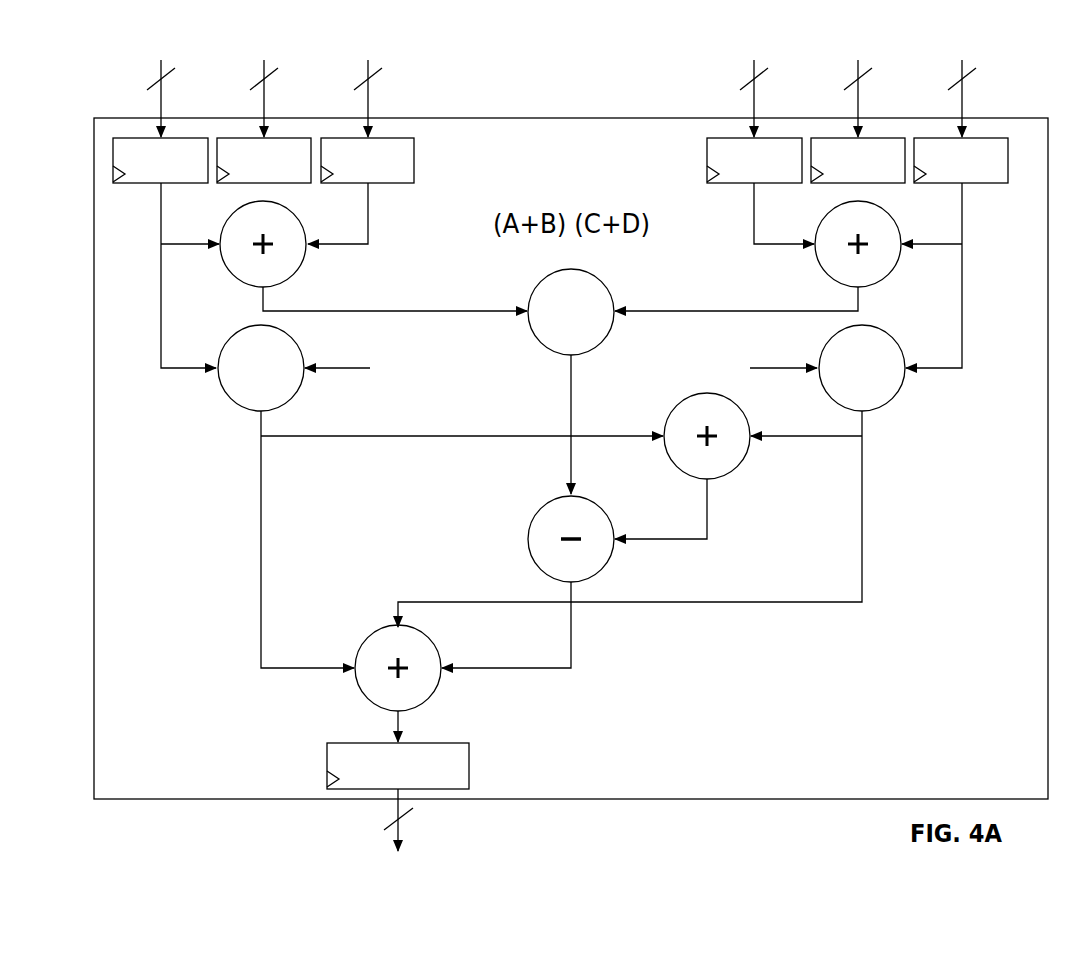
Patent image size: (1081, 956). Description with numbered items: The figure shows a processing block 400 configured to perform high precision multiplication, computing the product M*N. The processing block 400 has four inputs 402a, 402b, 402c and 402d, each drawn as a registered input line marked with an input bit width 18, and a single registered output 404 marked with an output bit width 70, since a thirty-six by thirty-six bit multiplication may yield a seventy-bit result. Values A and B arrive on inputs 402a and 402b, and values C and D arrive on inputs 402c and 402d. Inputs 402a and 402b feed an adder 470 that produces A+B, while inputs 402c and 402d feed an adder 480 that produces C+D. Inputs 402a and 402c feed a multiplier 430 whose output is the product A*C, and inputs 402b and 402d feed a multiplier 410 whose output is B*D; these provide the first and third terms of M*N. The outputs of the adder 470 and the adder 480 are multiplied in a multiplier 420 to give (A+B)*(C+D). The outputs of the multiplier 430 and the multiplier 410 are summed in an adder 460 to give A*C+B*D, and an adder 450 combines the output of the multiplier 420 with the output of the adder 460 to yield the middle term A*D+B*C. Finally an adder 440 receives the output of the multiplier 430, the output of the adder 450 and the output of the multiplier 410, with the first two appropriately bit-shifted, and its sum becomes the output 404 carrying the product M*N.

The processing block 400 is at (100, 74).
The input 402a is at (161, 66).
The input 402b is at (368, 66).
The input 402c is at (754, 66).
The input 402d is at (962, 66).
The input bit width 18 is at (563, 121).
The adder 470 is at (293, 274).
The adder 480 is at (888, 274).
The multiplier 420 is at (601, 342).
The multiplier 430 is at (291, 398).
The multiplier 410 is at (892, 398).
The adder 460 is at (737, 466).
The adder 450 is at (603, 567).
The adder 440 is at (428, 698).
The output 404 is at (399, 828).
The output bit width 70 is at (419, 815).